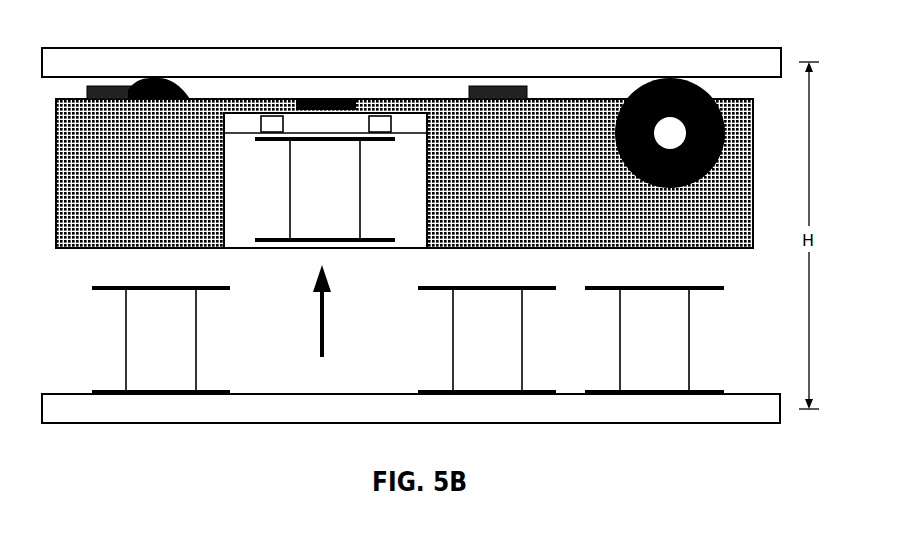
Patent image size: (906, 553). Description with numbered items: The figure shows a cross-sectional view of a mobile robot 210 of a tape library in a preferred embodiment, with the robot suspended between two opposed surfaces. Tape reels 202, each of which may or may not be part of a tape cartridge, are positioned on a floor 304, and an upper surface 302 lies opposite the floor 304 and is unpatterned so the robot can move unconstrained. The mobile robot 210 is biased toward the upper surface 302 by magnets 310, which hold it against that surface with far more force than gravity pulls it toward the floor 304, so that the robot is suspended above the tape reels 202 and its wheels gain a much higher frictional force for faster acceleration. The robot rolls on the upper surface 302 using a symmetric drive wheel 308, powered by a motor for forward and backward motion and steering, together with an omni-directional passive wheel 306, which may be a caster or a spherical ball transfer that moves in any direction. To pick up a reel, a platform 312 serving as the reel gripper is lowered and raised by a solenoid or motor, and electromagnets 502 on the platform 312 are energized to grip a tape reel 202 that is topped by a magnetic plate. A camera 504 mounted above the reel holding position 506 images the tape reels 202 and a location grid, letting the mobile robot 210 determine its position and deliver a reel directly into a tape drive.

The tape reel 202 is at (340, 201).
The mobile robot 210 is at (75, 270).
The upper surface 302 is at (728, 64).
The lower surface 304 is at (257, 400).
The omni-directional passive wheel 306 is at (145, 78).
The drive wheel 308 is at (720, 155).
The magnet 310 is at (88, 86).
The platform 312 is at (220, 98).
The electromagnet 502 is at (270, 120).
The camera 504 is at (320, 106).
The reel holding position 506 is at (407, 118).